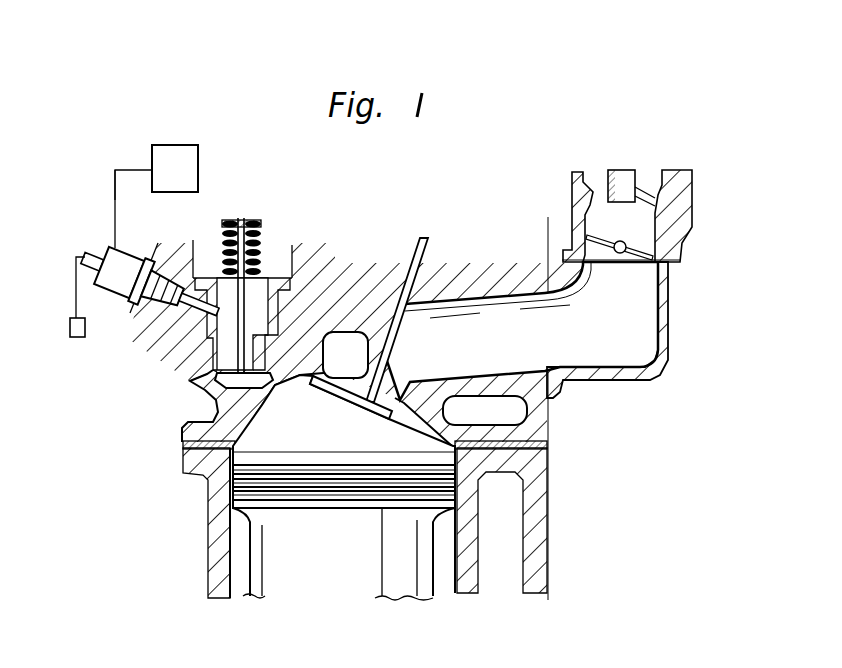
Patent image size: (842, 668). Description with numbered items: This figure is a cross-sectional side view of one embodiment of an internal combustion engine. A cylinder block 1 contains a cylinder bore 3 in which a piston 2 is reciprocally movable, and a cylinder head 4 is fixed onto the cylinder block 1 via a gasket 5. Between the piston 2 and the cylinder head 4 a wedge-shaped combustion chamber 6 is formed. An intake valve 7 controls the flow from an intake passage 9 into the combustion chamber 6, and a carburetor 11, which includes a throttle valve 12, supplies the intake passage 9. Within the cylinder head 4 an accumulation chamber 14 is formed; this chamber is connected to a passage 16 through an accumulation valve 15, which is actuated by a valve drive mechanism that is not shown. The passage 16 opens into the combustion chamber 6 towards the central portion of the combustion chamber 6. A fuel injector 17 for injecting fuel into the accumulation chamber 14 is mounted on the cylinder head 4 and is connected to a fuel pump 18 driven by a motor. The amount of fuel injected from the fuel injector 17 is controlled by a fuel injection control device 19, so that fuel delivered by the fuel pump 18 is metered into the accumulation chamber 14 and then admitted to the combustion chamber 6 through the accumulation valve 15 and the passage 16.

The cylinder block 1 is at (542, 532).
The piston 2 is at (395, 578).
The cylinder bore 3 is at (452, 567).
The cylinder head 4 is at (330, 264).
The gasket 5 is at (548, 446).
The combustion chamber 6 is at (287, 422).
The intake valve 7 is at (410, 269).
The intake passage 9 is at (487, 355).
The carburetor 11 is at (693, 212).
The throttle valve 12 is at (668, 282).
The accumulation chamber 14 is at (268, 318).
The accumulation valve 15 is at (229, 271).
The passage 16 is at (217, 392).
The fuel injector 17 is at (146, 261).
The fuel pump 18 is at (85, 334).
The fuel injection control device 19 is at (199, 165).